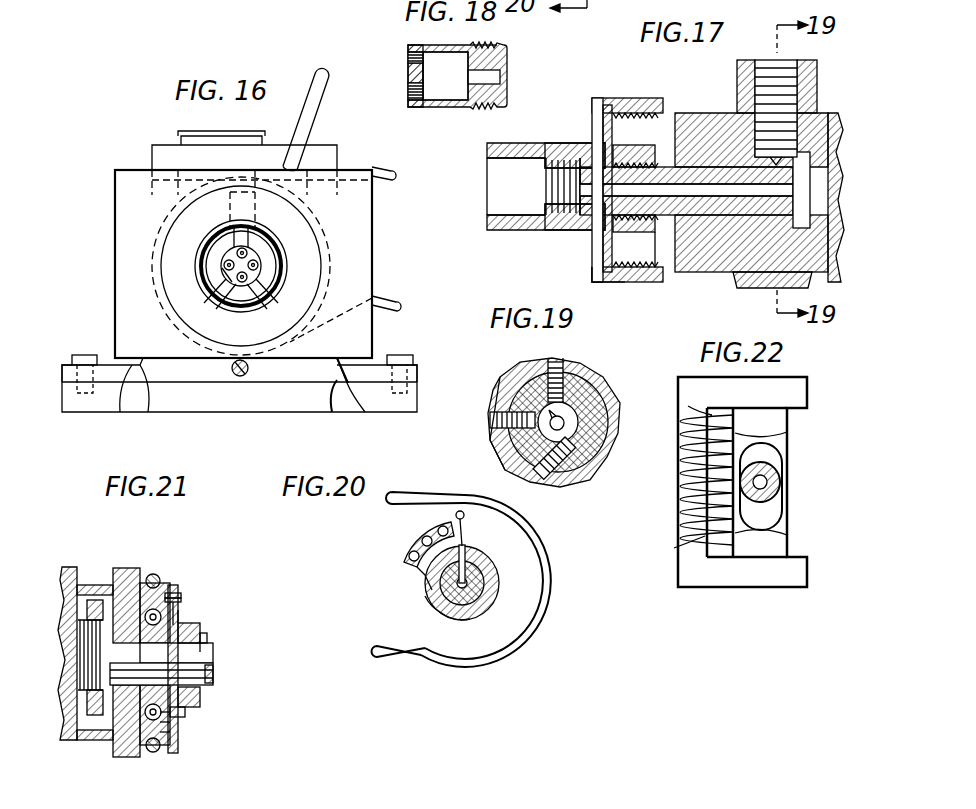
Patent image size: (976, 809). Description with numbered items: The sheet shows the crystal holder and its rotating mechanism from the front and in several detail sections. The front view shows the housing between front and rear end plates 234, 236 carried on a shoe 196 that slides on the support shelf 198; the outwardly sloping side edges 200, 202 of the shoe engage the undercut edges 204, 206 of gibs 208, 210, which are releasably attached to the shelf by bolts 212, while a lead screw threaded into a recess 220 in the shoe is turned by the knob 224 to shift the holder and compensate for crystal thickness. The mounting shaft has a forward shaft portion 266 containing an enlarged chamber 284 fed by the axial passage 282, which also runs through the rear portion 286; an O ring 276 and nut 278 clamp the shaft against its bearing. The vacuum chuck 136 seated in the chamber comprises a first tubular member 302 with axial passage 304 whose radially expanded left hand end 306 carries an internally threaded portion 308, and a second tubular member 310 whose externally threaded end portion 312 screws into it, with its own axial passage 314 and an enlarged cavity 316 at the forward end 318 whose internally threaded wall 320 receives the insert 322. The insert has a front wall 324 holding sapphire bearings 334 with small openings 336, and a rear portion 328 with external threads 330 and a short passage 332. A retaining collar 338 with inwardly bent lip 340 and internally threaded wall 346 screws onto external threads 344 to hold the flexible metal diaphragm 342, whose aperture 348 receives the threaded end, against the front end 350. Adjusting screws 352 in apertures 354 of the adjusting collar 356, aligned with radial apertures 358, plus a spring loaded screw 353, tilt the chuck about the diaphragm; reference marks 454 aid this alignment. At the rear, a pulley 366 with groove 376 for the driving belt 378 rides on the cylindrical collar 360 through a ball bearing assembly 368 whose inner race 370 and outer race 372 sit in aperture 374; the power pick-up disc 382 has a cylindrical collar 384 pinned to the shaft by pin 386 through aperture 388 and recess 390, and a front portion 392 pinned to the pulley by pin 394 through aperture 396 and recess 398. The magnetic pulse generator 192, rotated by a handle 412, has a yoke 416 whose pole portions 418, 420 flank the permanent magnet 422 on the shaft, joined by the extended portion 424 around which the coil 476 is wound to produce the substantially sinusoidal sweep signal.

In FIG. 17, the vacuum chuck 136 is at (535, 275).
In FIG. 16, the magnetic pulse generator 192 is at (180, 133).
In FIG. 16, the shoe 196 is at (280, 387).
In FIG. 16, the support shelf 198 is at (215, 398).
In FIG. 16, the side edge 200 is at (120, 412).
In FIG. 16, the side edge 202 is at (332, 412).
In FIG. 16, the undercut edge 204 is at (148, 412).
In FIG. 16, the undercut edge 206 is at (365, 412).
In FIG. 16, the gib 208 is at (62, 366).
In FIG. 16, the gib 210 is at (417, 376).
In FIG. 16, the bolts 212 is at (400, 355).
In FIG. 16, the threaded recess 220 is at (248, 370).
In FIG. 16, the knob 224 is at (232, 369).
In FIG. 16, the front end plate 234 is at (115, 190).
In FIG. 21, the back end plate 236 is at (124, 568).
In FIG. 17, the forward shaft portion 266 is at (838, 247).
In FIG. 19, the forward shaft portion 266 is at (590, 395).
In FIG. 21, the O ring 276 is at (72, 590).
In FIG. 21, the nut 278 is at (92, 618).
In FIG. 22, the axial passage 282 is at (779, 481).
In FIG. 20, the axial passage 282 is at (482, 582).
In FIG. 17, the enlarged chamber 284 is at (680, 113).
In FIG. 19, the enlarged chamber 284 is at (585, 380).
In FIG. 22, the rear portion 286 is at (767, 487).
In FIG. 20, the rear portion 286 is at (478, 600).
In FIG. 21, the rear portion 286 is at (213, 675).
In FIG. 17, the first tubular member 302 is at (752, 200).
In FIG. 19, the first tubular member 302 is at (598, 412).
In FIG. 17, the axial passage 304 is at (698, 198).
In FIG. 17, the left hand end 306 is at (625, 126).
In FIG. 17, the internally threaded portion 308 is at (635, 241).
In FIG. 17, the second tubular member 310 is at (512, 230).
In FIG. 17, the externally threaded end portion 312 is at (590, 160).
In FIG. 17, the axial passage 314 is at (582, 220).
In FIG. 17, the enlarged cavity 316 is at (497, 181).
In FIG. 17, the forward end 318 is at (552, 152).
In FIG. 17, the internally threaded wall 320 is at (548, 180).
In FIG. 18, the insert 322 is at (444, 86).
In FIG. 16, the front wall 324 is at (259, 262).
In FIG. 18, the front wall 324 is at (410, 72).
In FIG. 18, the rear portion 328 is at (505, 92).
In FIG. 18, the external threads 330 is at (483, 45).
In FIG. 18, the short passage 332 is at (500, 77).
In FIG. 16, the sapphire bearings 334 is at (244, 292).
In FIG. 18, the sapphire bearings 334 is at (410, 100).
In FIG. 16, the small openings 336 is at (257, 275).
In FIG. 18, the small openings 336 is at (410, 88).
In FIG. 16, the retaining collar 338 is at (262, 243).
In FIG. 17, the retaining collar 338 is at (630, 98).
In FIG. 17, the inwardly bent lip 340 is at (598, 98).
In FIG. 17, the flexible metal diaphragm 342 is at (603, 138).
In FIG. 17, the external threads 344 is at (656, 270).
In FIG. 17, the internally threaded wall 346 is at (625, 282).
In FIG. 17, the aperture 348 is at (590, 197).
In FIG. 17, the front end 350 is at (603, 282).
In FIG. 17, the adjusting screws 352 is at (765, 60).
In FIG. 19, the adjusting screws 352 is at (490, 420).
In FIG. 19, the spring loaded screw 353 is at (600, 424).
In FIG. 19, the apertures 354 is at (503, 383).
In FIG. 16, the adjusting collar 356 is at (306, 268).
In FIG. 17, the adjusting collar 356 is at (736, 288).
In FIG. 19, the adjusting collar 356 is at (545, 362).
In FIG. 19, the apertures 358 is at (507, 440).
In FIG. 20, the cylindrical collar 360 is at (427, 592).
In FIG. 21, the cylindrical collar 360 is at (150, 650).
In FIG. 21, the pulley 366 is at (172, 588).
In FIG. 20, the ball bearing assembly 368 is at (405, 548).
In FIG. 21, the ball bearing assembly 368 is at (170, 724).
In FIG. 20, the inner race 370 is at (420, 577).
In FIG. 21, the inner race 370 is at (172, 715).
In FIG. 20, the outer race 372 is at (410, 557).
In FIG. 21, the outer race 372 is at (166, 733).
In FIG. 21, the aperture 374 is at (158, 747).
In FIG. 21, the groove 376 is at (148, 583).
In FIG. 16, the driving belt 378 is at (388, 181).
In FIG. 20, the driving belt 378 is at (412, 492).
In FIG. 21, the driving belt 378 is at (154, 574).
In FIG. 20, the power pick-up disc 382 is at (408, 609).
In FIG. 21, the power pick-up disc 382 is at (186, 707).
In FIG. 20, the cylindrical collar 384 is at (452, 620).
In FIG. 21, the cylindrical collar 384 is at (200, 693).
In FIG. 20, the pin 386 is at (466, 546).
In FIG. 21, the pin 386 is at (190, 618).
In FIG. 21, the aperture 388 is at (200, 632).
In FIG. 21, the recess 390 is at (205, 652).
In FIG. 21, the front portion 392 is at (178, 590).
In FIG. 20, the pin 394 is at (460, 511).
In FIG. 21, the pin 394 is at (180, 608).
In FIG. 21, the aperture 396 is at (181, 601).
In FIG. 21, the recess 398 is at (181, 595).
In FIG. 16, the handle 412 is at (293, 119).
In FIG. 16, the yoke 416 is at (152, 158).
In FIG. 22, the yoke 416 is at (790, 380).
In FIG. 22, the pole portion 418 is at (790, 418).
In FIG. 22, the pole portion 420 is at (790, 547).
In FIG. 22, the permanent magnet 422 is at (775, 456).
In FIG. 22, the extended portion 424 is at (690, 558).
In FIG. 16, the reference marks 454 is at (222, 268).
In FIG. 17, the reference marks 454 is at (520, 207).
In FIG. 22, the coil 476 is at (685, 510).